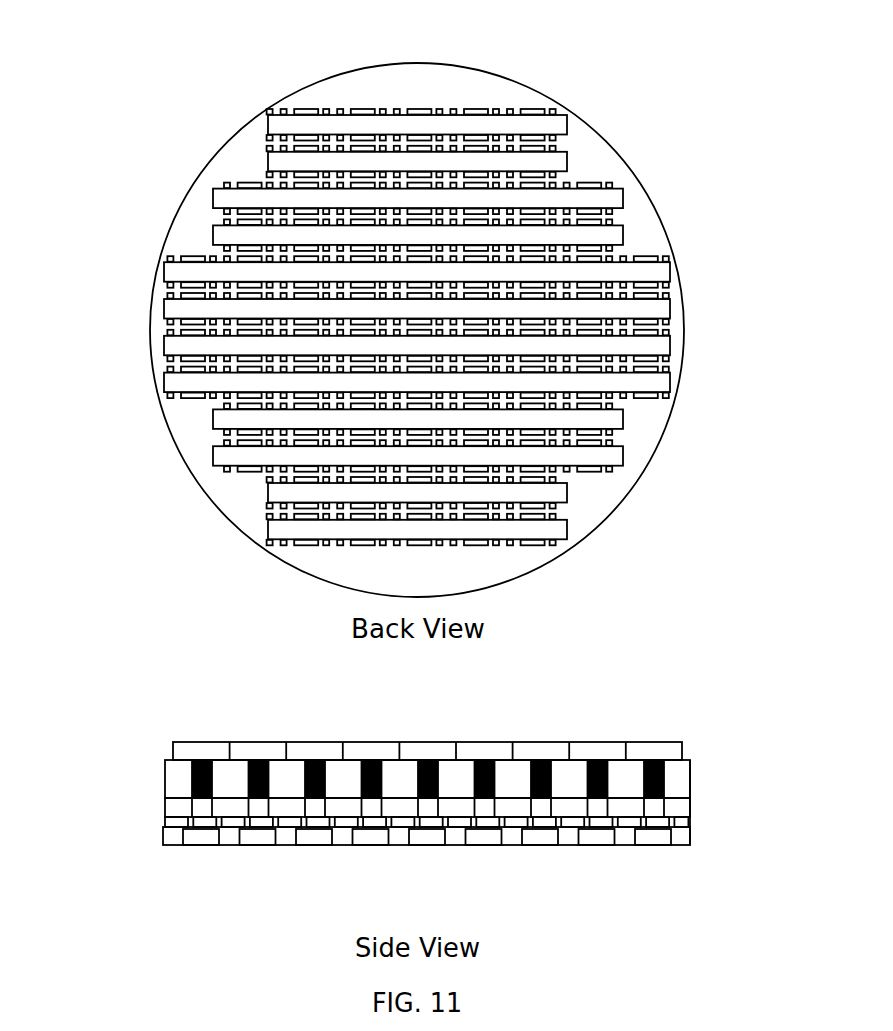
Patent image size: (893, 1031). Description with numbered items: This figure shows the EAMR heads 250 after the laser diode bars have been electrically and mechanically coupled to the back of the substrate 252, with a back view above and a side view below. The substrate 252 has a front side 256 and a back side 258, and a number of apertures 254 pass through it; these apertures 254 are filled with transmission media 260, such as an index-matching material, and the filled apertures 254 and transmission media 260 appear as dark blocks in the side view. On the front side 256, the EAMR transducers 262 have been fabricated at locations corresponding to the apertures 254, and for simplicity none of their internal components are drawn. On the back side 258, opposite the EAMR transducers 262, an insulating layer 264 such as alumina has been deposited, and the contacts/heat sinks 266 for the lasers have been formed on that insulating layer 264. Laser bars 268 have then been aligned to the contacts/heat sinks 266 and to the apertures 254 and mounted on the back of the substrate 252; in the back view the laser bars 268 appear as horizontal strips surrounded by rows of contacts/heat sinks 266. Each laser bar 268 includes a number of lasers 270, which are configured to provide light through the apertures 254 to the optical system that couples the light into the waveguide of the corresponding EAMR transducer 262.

The EAMR heads 250 is at (442, 42).
The substrate 252 is at (593, 128).
The apertures 254 is at (354, 536).
The front side 256 is at (462, 755).
The back side 258 is at (455, 812).
The transmission media 260 is at (235, 221).
The EAMR transducers 262 is at (248, 742).
The insulating layer 264 is at (738, 809).
The contacts/heat sinks 266 is at (627, 258).
The laser bars 268 is at (672, 384).
The lasers 270 is at (257, 845).